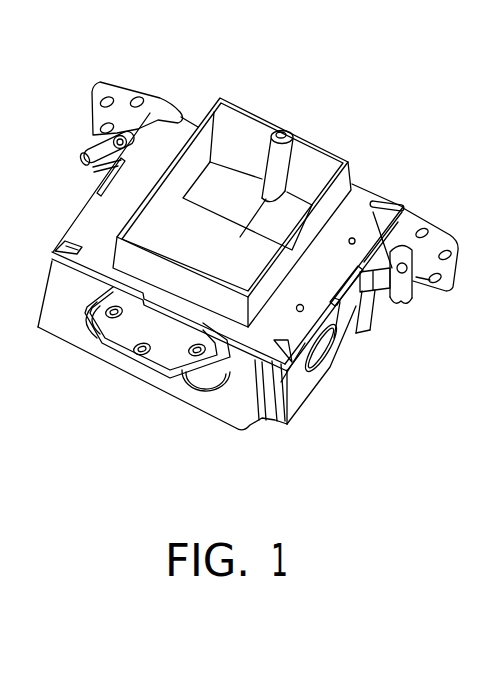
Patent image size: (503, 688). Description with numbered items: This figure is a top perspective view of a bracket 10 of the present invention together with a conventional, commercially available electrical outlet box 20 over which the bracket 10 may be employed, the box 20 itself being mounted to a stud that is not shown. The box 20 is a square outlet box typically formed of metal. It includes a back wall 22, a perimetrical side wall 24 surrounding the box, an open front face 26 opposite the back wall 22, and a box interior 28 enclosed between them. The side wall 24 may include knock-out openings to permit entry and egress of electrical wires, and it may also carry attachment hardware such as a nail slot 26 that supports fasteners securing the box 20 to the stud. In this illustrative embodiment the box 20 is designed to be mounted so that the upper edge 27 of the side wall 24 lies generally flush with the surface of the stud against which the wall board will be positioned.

The bracket 10 is at (356, 130).
The electrical outlet box 20 is at (346, 385).
The back wall 22 is at (222, 424).
The perimetrical side wall 24 is at (64, 321).
The open front face 26 is at (389, 205).
The upper edge 27 is at (62, 240).
The box interior 28 is at (233, 235).